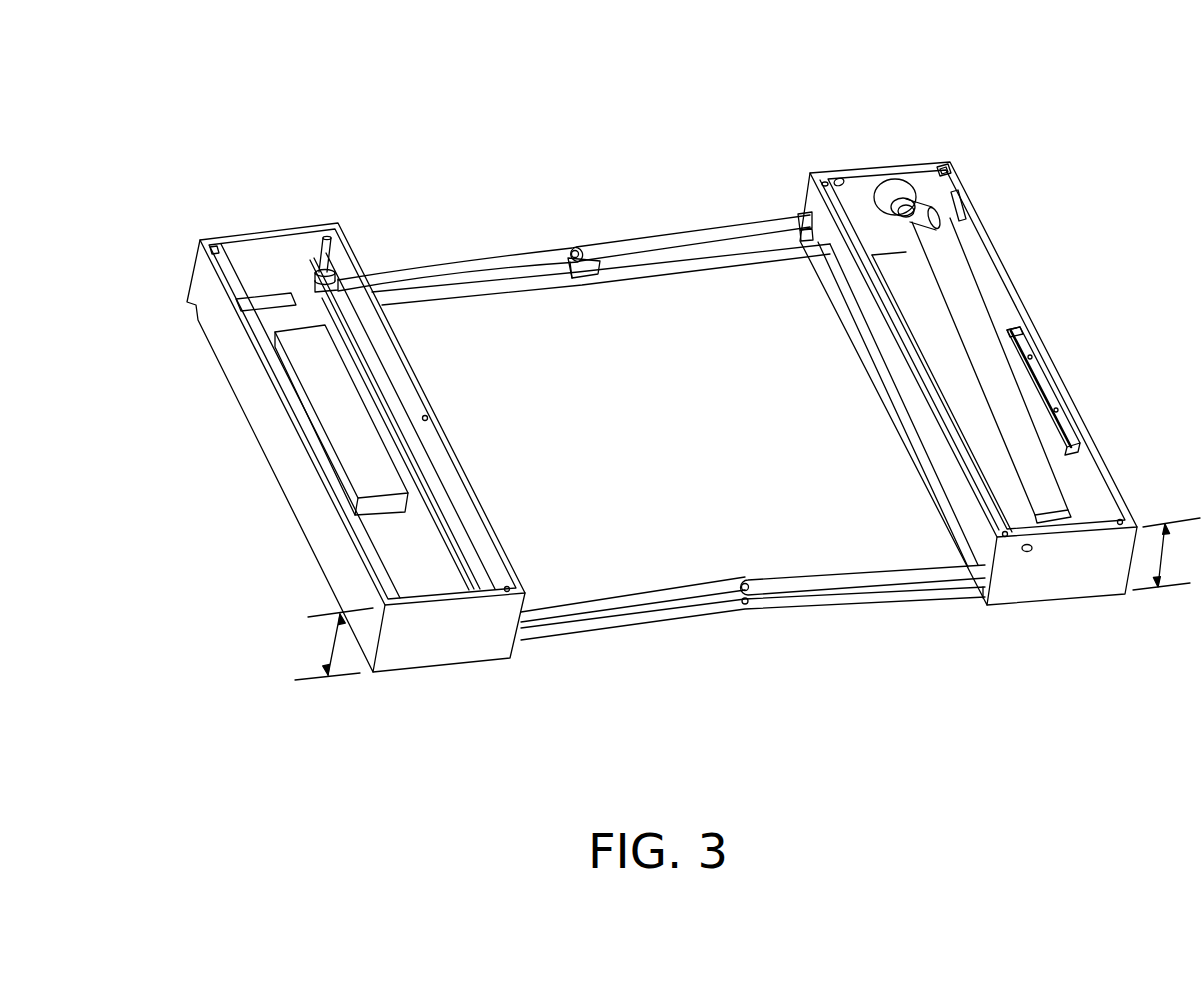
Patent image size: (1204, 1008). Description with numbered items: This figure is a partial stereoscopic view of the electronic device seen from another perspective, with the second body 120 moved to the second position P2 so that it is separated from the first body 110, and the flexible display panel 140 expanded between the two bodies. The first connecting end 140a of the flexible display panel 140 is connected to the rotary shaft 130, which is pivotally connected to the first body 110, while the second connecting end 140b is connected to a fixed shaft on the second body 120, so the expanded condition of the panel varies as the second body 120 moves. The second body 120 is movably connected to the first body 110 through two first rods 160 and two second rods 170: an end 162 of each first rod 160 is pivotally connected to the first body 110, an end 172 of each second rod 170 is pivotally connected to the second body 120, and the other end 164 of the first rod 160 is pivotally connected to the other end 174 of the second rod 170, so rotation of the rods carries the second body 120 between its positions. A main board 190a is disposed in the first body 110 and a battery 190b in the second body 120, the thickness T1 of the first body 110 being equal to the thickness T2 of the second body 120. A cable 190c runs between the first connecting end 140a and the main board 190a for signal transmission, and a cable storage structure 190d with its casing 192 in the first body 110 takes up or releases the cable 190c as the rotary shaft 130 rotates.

The first body 110 is at (1035, 578).
The second body 120 is at (406, 658).
The rotary shaft 130 is at (877, 192).
The flexible display panel 140 is at (673, 560).
The first connecting end 140a is at (917, 260).
The second connecting end 140b is at (264, 482).
The first rod 160 is at (688, 236).
The end of the first rod 162 is at (802, 213).
The other end of the first rod 164 is at (587, 243).
The second rod 170 is at (476, 262).
The end of the second rod 172 is at (314, 258).
The other end of the second rod 174 is at (559, 243).
The main board 190a is at (936, 314).
The battery 190b is at (310, 378).
The cable 190c is at (922, 196).
The cable storage structure 190d is at (1021, 315).
The casing 192 is at (1080, 468).
The thickness of the first body T1 is at (1168, 554).
The thickness of the second body T2 is at (332, 644).
The second position P2 is at (467, 692).